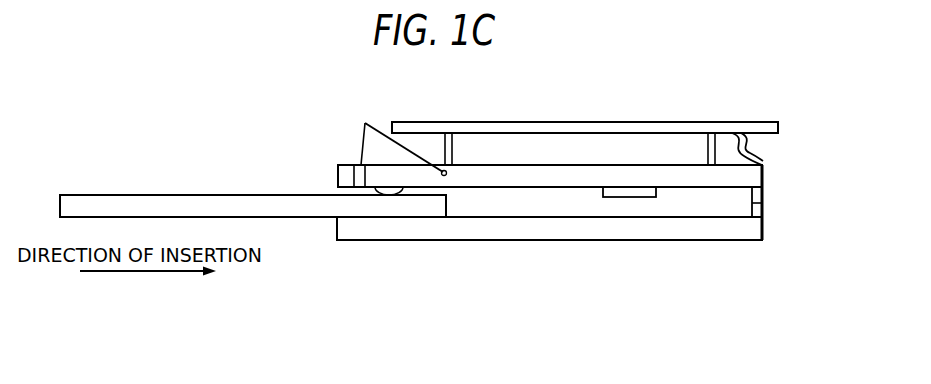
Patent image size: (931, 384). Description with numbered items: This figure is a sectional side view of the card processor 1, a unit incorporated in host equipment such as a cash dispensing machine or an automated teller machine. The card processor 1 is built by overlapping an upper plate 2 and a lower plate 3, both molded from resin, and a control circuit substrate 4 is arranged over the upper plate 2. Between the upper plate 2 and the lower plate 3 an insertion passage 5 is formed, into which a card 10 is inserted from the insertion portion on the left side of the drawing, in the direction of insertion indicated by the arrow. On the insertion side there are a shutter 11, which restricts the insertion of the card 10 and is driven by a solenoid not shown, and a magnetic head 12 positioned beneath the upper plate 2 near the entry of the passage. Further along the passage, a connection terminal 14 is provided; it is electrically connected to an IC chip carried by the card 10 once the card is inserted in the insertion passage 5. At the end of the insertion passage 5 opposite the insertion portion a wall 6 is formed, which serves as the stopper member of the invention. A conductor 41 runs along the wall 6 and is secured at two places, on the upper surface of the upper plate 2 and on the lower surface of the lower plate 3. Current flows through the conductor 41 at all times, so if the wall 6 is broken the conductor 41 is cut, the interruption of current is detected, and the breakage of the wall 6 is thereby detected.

The card processor 1 is at (578, 110).
The upper plate 2 is at (574, 168).
The lower plate 3 is at (624, 232).
The control circuit substrate 4 is at (773, 130).
The insertion passage 5 is at (581, 207).
The wall 6 is at (759, 204).
The card 10 is at (108, 200).
The shutter 11 is at (371, 138).
The magnetic head 12 is at (393, 192).
The connection terminal 14 is at (618, 190).
The conductor 41 is at (764, 163).